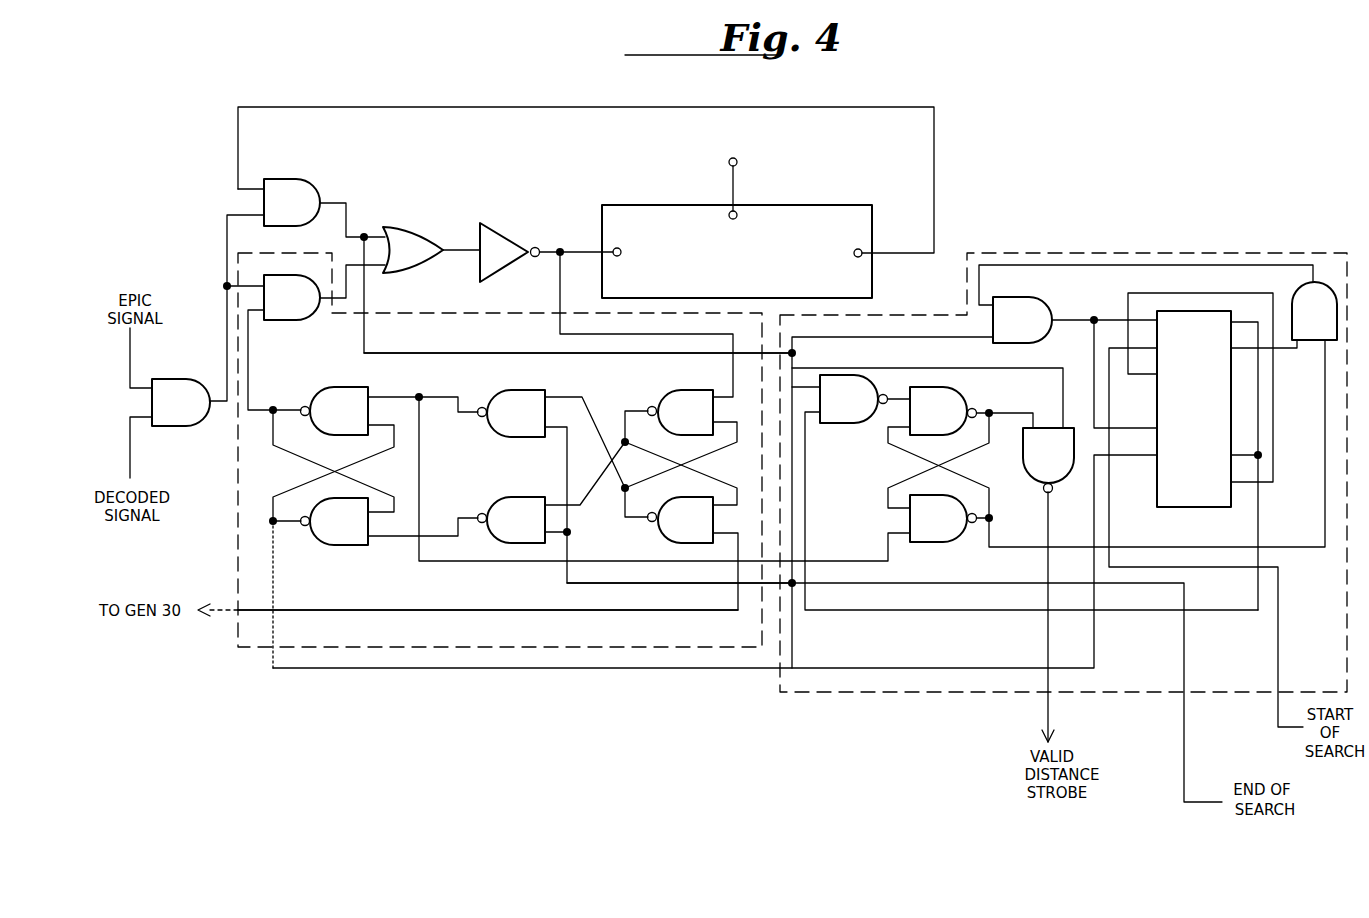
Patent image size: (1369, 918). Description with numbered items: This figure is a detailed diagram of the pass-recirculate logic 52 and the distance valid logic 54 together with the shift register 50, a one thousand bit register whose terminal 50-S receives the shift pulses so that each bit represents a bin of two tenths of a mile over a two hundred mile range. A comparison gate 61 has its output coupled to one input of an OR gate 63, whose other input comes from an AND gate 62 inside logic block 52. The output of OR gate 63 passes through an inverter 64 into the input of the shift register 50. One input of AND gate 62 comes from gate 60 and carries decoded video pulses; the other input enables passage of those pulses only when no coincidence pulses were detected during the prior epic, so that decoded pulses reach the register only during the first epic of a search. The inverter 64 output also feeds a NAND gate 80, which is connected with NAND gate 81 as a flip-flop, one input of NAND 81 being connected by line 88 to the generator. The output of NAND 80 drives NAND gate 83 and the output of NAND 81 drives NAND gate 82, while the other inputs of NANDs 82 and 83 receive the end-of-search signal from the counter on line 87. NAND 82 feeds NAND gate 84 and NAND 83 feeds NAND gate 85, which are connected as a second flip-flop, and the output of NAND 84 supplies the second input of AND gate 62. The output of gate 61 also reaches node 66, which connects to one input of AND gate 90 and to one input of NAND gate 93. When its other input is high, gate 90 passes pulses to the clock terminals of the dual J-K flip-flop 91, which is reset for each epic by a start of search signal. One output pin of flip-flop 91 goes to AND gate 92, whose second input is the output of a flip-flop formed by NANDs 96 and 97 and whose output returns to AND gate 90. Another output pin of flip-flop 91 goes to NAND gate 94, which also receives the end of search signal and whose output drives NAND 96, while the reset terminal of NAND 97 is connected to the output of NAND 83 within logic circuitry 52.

The shift register 50 is at (616, 222).
The terminal of shift register 50-S is at (743, 182).
The pass-recirculate logic 52 is at (237, 508).
The distance valid logic 54 is at (1068, 253).
The gate 60 is at (182, 378).
The comparison gate 61 is at (305, 188).
The AND gate 62 is at (302, 310).
The OR gate 63 is at (405, 235).
The inverter 64 is at (498, 245).
The node 66 is at (805, 352).
The NAND gate 80 is at (678, 393).
The NAND gate 81 is at (665, 530).
The NAND gate 82 is at (505, 393).
The NAND gate 83 is at (500, 500).
The NAND gate 84 is at (330, 395).
The NAND gate 85 is at (326, 540).
The line 87 is at (563, 578).
The line 88 is at (400, 610).
The AND gate 90 is at (1013, 338).
The dual J-K flip-flop 91 is at (1192, 495).
The AND gate 92 is at (1305, 292).
The NAND gate 93 is at (1040, 470).
The NAND gate 94 is at (846, 418).
The NAND gate 96 is at (955, 395).
The NAND gate 97 is at (940, 535).